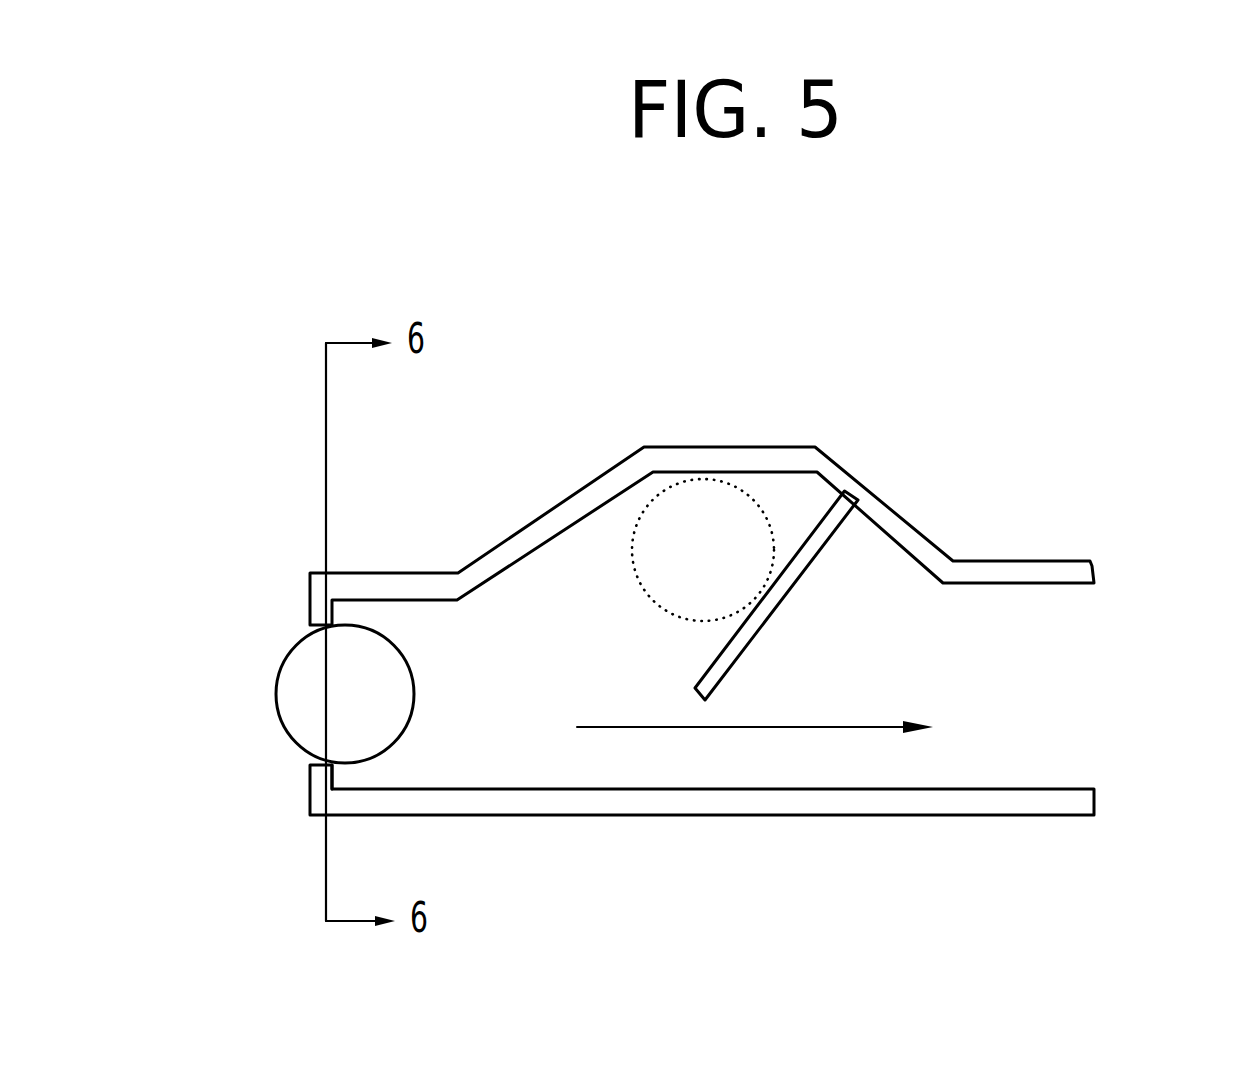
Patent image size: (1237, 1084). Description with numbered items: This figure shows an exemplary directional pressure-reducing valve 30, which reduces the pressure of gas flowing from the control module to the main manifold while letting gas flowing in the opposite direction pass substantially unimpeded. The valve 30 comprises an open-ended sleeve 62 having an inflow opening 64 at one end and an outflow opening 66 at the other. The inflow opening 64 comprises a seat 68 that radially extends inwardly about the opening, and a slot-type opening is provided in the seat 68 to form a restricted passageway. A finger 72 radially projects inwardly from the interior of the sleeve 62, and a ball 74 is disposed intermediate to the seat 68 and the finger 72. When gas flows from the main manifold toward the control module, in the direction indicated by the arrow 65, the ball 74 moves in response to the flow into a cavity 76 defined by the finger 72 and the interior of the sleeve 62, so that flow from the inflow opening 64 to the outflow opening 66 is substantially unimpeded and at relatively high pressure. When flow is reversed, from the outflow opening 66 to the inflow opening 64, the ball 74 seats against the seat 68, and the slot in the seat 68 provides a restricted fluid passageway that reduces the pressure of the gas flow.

The directional pressure-reducing valve 30 is at (1078, 362).
The open-ended sleeve 62 is at (847, 815).
The inflow opening 64 is at (268, 628).
The arrow 65 is at (833, 727).
The outflow opening 66 is at (1072, 655).
The seat 68 is at (333, 780).
The finger 72 is at (758, 632).
The ball 74 is at (408, 700).
The cavity 76 is at (765, 518).